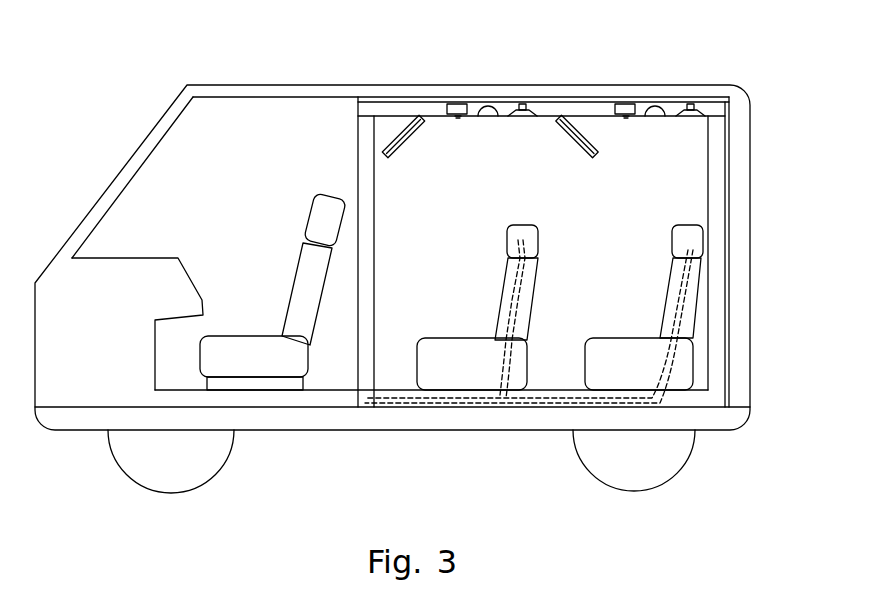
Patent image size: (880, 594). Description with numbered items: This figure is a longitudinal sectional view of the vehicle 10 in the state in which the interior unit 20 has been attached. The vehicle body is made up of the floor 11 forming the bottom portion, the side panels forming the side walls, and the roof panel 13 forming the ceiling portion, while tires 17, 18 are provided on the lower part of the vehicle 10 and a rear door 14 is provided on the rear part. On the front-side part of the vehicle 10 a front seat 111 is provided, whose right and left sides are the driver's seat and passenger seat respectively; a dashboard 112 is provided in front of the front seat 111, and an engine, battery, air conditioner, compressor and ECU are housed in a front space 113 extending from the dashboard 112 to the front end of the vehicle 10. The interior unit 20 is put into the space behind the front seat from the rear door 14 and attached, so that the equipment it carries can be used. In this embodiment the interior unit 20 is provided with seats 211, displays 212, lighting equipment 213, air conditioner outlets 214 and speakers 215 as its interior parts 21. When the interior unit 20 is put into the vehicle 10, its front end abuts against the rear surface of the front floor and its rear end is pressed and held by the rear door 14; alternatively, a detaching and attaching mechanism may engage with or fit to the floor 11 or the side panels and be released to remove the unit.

The vehicle 10 is at (746, 77).
The floor 11 is at (487, 422).
The roof panel 13 is at (273, 86).
The rear door 14 is at (740, 128).
The tire 17 is at (165, 490).
The tire 18 is at (623, 490).
The interior unit 20 is at (348, 146).
The interior parts 21 is at (385, 185).
The front seat 111 is at (276, 372).
The dashboard 112 is at (187, 262).
The front space 113 is at (67, 292).
The seats 211 is at (437, 380).
The displays 212 is at (404, 114).
The lighting equipment 213 is at (488, 108).
The air conditioner outlets 214 is at (456, 104).
The speakers 215 is at (523, 104).